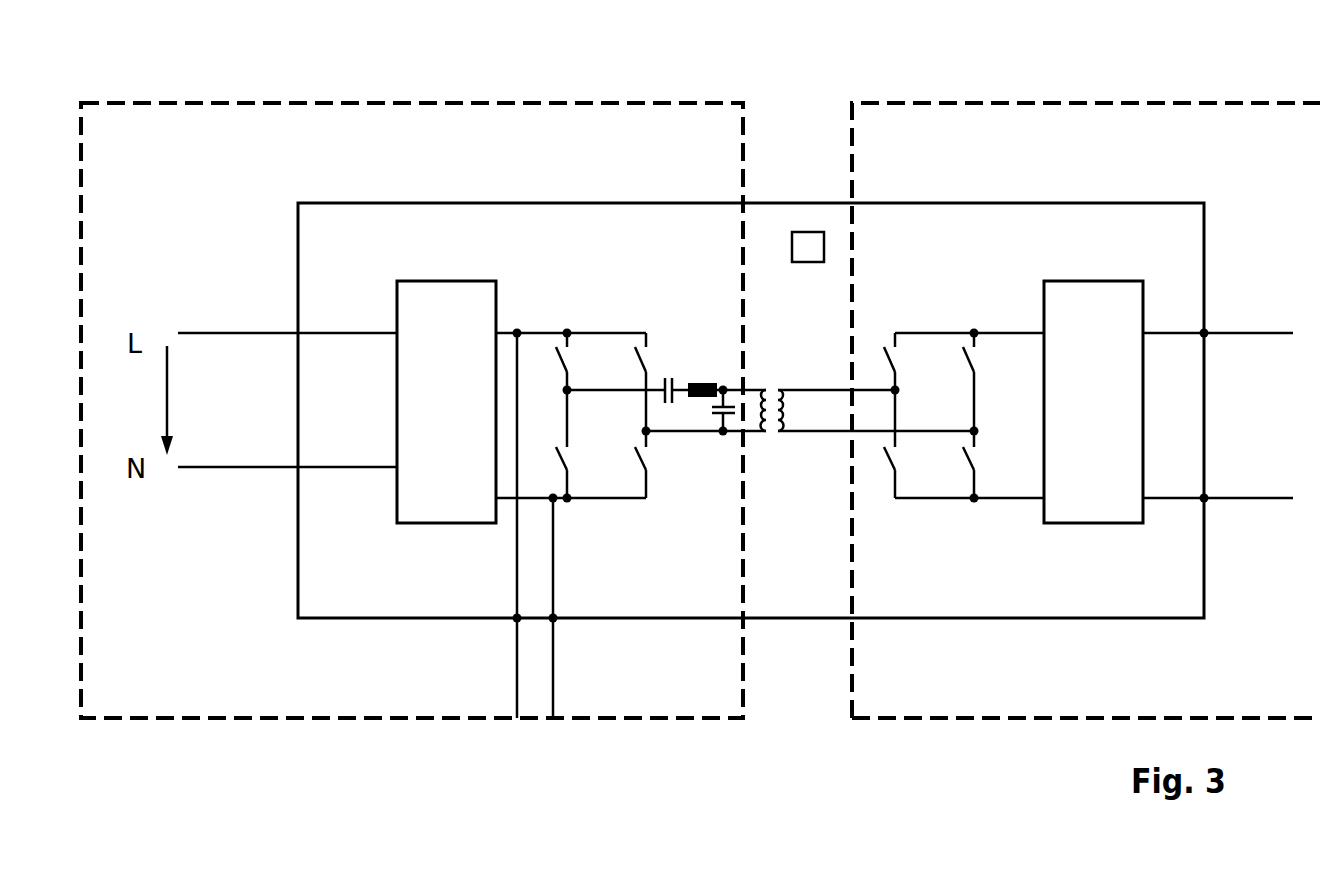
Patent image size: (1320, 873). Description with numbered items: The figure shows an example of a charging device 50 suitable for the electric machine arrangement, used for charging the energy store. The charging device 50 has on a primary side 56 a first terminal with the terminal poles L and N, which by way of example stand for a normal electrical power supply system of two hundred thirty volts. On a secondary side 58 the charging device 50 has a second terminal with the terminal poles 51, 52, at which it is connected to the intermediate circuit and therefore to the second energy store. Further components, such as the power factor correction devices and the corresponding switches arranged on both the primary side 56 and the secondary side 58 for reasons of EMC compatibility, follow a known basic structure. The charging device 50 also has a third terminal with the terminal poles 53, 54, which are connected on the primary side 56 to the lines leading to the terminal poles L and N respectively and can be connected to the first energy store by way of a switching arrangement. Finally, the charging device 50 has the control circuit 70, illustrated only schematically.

The charging device 50 is at (770, 203).
The terminal pole 51 is at (1206, 336).
The terminal pole 52 is at (1206, 501).
The terminal pole 53 is at (515, 620).
The terminal pole 54 is at (556, 620).
The primary side 56 is at (345, 103).
The secondary side 58 is at (1040, 103).
The control circuit 70 is at (810, 232).